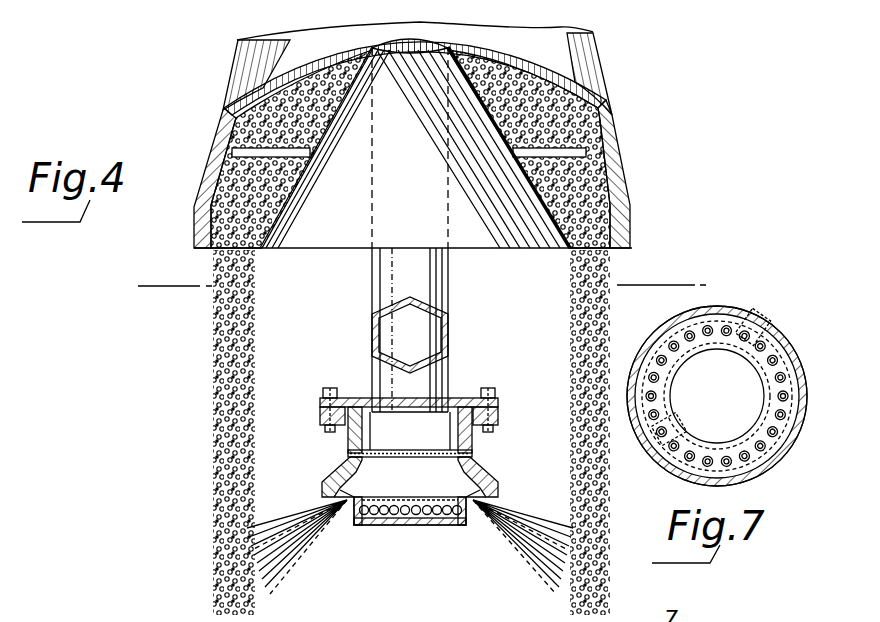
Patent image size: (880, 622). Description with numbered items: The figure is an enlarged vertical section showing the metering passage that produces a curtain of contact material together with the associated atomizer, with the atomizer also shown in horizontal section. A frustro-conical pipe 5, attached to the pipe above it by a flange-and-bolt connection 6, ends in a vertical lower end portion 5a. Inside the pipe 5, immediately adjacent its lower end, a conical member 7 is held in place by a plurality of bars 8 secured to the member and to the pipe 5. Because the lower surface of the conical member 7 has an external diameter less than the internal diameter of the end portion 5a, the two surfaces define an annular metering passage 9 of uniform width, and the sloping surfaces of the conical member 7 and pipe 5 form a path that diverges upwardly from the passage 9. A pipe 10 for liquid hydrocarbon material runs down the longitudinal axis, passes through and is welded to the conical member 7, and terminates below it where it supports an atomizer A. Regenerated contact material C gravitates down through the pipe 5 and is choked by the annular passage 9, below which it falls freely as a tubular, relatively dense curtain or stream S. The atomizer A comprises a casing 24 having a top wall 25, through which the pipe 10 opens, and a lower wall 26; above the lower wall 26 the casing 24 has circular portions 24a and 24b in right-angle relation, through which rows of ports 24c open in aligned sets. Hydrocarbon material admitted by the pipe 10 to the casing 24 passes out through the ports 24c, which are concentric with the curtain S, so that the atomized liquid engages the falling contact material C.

In FIG. 4, the frustro-conical pipe 5 is at (618, 123).
In FIG. 4, the vertical lower end portion 5a is at (630, 230).
In FIG. 4, the flange-and-bolt connection 6 is at (173, 280).
In FIG. 4, the conical member 7 is at (322, 250).
In FIG. 4, the bars 8 is at (262, 152).
In FIG. 4, the annular metering passage 9 is at (568, 257).
In FIG. 4, the pipe 10 is at (450, 290).
In FIG. 4, the casing 24 is at (470, 470).
In FIG. 7, the casing 24 is at (768, 482).
In FIG. 4, the circular casing portion 24a is at (465, 521).
In FIG. 4, the circular casing portion 24b is at (483, 497).
In FIG. 7, the circular casing portion 24b is at (652, 430).
In FIG. 4, the ports 24c is at (365, 508).
In FIG. 7, the ports 24c is at (748, 335).
In FIG. 4, the top wall 25 is at (463, 397).
In FIG. 4, the lower wall 26 is at (428, 525).
In FIG. 7, the lower wall 26 is at (740, 345).
In FIG. 4, the atomizer A is at (340, 441).
In FIG. 7, the atomizer A is at (752, 295).
In FIG. 4, the contact material C is at (244, 183).
In FIG. 4, the curtain or stream S is at (608, 336).